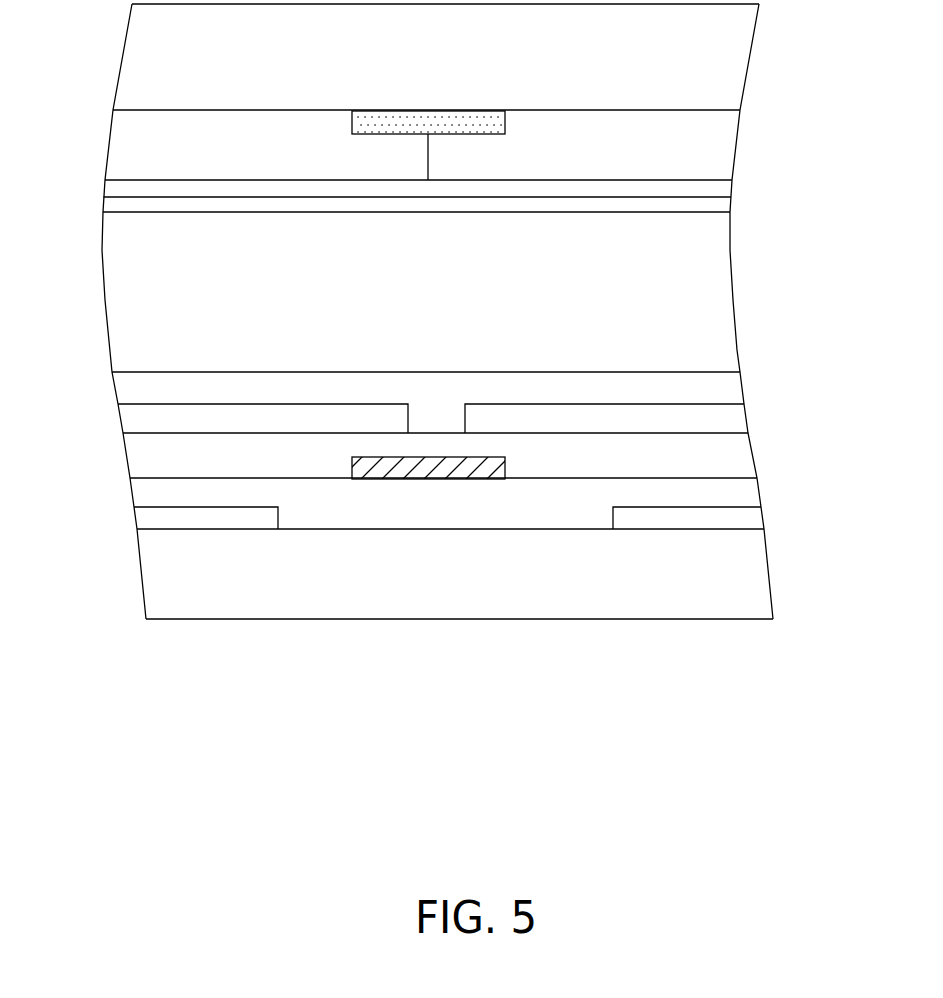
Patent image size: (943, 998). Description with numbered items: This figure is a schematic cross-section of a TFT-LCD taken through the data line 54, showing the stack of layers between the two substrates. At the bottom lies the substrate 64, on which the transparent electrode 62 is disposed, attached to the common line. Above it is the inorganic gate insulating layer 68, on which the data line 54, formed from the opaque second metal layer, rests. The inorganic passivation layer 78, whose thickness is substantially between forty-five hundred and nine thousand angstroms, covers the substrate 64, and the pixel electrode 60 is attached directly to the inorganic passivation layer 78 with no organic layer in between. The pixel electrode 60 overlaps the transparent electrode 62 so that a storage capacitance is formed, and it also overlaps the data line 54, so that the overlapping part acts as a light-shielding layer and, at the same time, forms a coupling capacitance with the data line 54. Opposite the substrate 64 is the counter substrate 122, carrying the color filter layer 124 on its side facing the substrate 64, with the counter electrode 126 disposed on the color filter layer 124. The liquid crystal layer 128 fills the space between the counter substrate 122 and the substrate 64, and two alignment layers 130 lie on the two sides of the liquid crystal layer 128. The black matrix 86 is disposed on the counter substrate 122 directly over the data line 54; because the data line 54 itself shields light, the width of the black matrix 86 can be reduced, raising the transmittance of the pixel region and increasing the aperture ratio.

The data line 54 is at (362, 466).
The pixel electrode 60 is at (155, 416).
The transparent electrode 62 is at (155, 518).
The substrate 64 is at (708, 584).
The inorganic gate insulating layer 68 is at (740, 490).
The inorganic passivation layer 78 is at (708, 464).
The black matrix 86 is at (353, 123).
The counter substrate 122 is at (712, 64).
The color filter layer 124 is at (712, 169).
The counter electrode 126 is at (722, 185).
The liquid crystal layer 128 is at (712, 279).
The alignment layers 130 is at (722, 204).